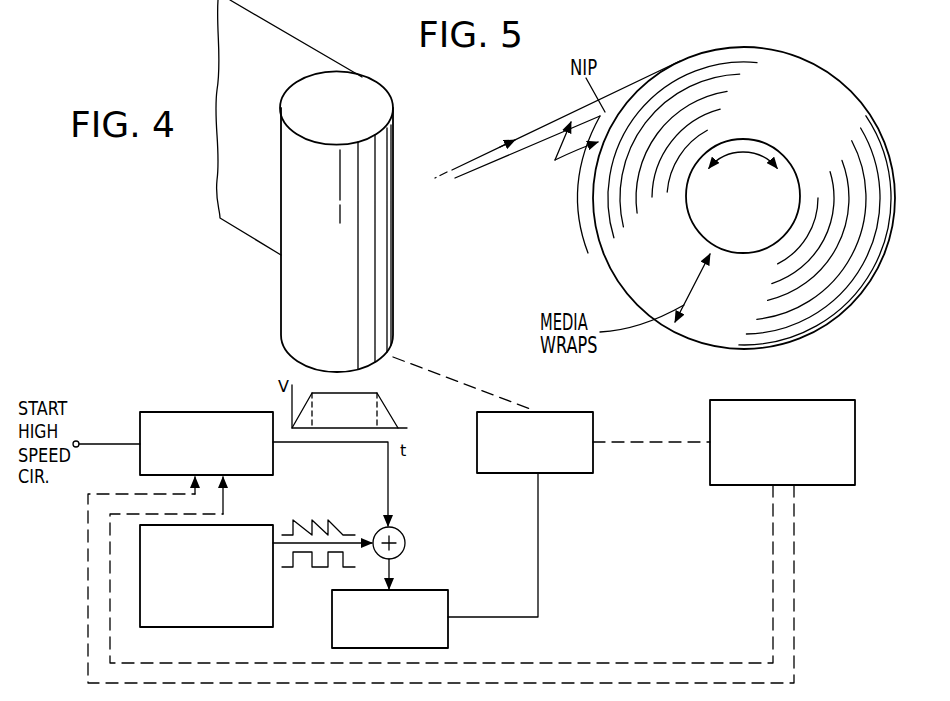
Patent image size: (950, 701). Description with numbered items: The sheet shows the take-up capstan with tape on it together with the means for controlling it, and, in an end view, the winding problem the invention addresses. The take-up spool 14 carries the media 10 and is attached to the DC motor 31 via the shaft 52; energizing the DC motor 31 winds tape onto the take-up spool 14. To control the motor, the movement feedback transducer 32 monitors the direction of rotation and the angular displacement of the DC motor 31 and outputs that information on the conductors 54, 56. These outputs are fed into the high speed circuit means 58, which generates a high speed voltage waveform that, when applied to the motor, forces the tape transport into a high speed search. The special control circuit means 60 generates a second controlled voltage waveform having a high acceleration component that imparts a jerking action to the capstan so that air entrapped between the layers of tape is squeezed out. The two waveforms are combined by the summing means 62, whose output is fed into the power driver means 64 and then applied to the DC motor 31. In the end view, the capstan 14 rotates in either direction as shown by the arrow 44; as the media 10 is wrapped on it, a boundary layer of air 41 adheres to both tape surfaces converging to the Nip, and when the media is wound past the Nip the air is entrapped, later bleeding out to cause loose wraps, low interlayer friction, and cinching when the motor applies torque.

In FIG. 4, the media 10 is at (236, 143).
In FIG. 5, the media 10 is at (533, 132).
In FIG. 4, the take-up spool 14 is at (296, 294).
In FIG. 5, the take-up spool 14 is at (747, 239).
In FIG. 4, the DC motor 31 is at (565, 474).
In FIG. 4, the movement feedback transducer 32 is at (740, 486).
In FIG. 5, the boundary layer of air 41 is at (555, 160).
In FIG. 5, the arrow 44 is at (750, 153).
In FIG. 4, the shaft 52 is at (455, 383).
In FIG. 4, the conductor 54 is at (773, 590).
In FIG. 4, the conductor 56 is at (794, 590).
In FIG. 4, the high speed circuit means 58 is at (197, 412).
In FIG. 4, the special control circuit means 60 is at (273, 615).
In FIG. 4, the summing means 62 is at (405, 539).
In FIG. 4, the power driver means 64 is at (422, 590).